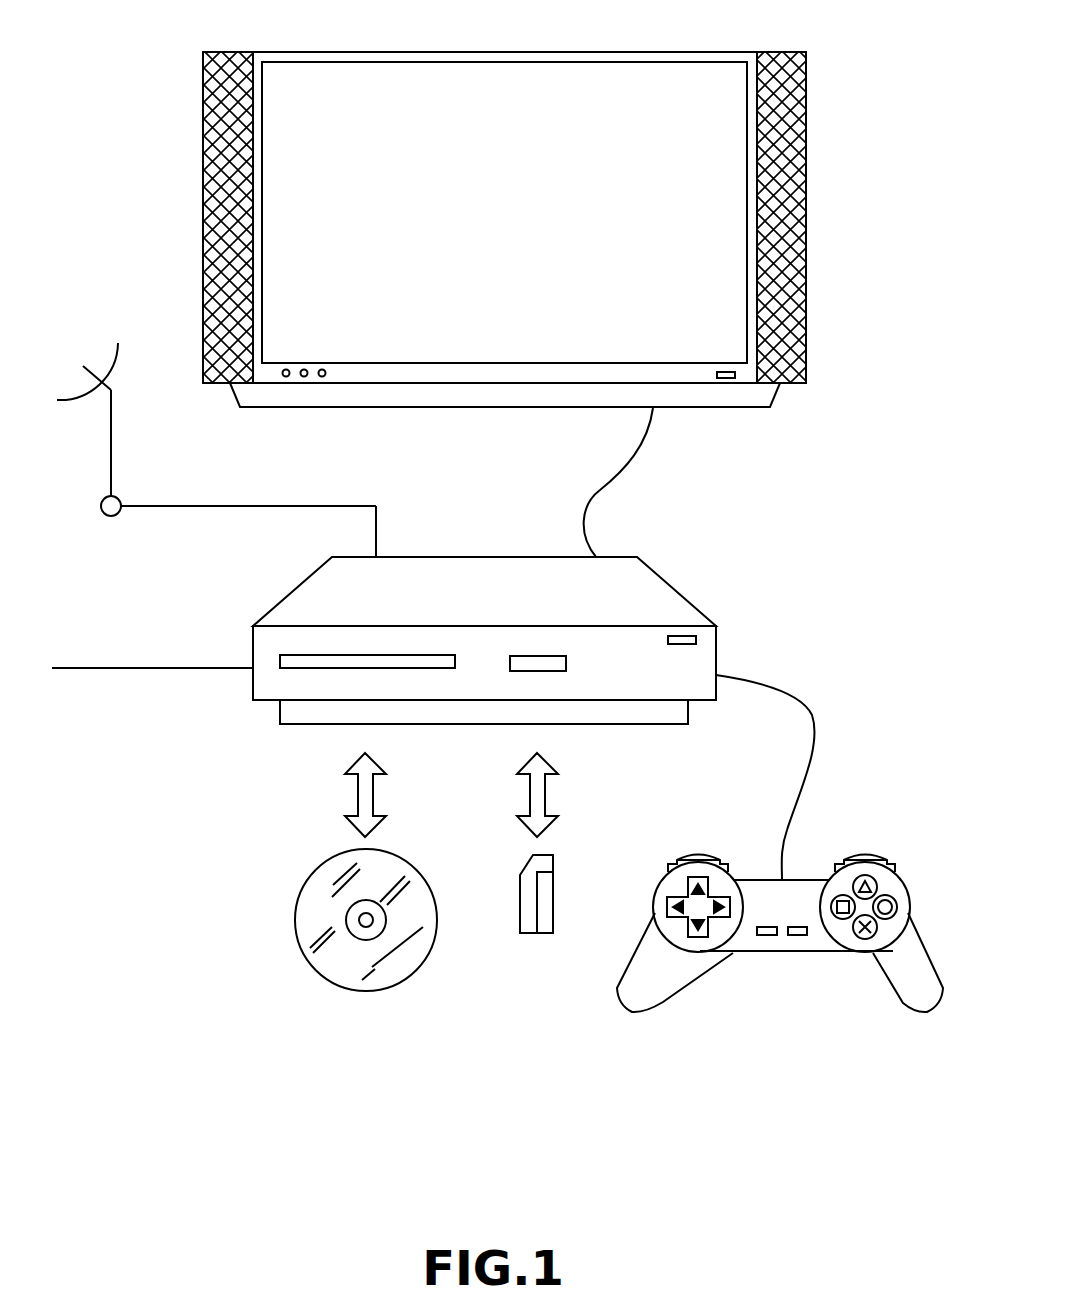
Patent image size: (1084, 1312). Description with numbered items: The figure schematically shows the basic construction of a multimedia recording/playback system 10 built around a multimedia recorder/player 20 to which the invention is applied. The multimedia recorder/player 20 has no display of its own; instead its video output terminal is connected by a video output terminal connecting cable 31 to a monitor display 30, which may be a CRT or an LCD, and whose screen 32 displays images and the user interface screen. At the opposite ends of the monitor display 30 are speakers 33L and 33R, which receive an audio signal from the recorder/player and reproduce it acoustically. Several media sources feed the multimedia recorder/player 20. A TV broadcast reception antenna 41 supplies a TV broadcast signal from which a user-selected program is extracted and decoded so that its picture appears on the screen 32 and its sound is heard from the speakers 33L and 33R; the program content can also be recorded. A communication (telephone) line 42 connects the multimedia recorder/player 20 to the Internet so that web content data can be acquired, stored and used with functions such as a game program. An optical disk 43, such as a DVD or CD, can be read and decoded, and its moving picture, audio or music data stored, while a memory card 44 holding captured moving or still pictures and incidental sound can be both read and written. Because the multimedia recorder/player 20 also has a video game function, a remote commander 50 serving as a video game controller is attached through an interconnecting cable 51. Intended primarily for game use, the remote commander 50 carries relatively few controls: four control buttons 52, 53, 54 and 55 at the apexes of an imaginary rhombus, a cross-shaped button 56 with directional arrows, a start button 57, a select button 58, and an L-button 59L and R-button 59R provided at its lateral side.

The multimedia recording/playback system 10 is at (870, 532).
The multimedia recorder/player 20 is at (712, 572).
The monitor display 30 is at (805, 243).
The video output terminal connecting cable 31 is at (622, 470).
The screen 32 is at (672, 70).
The speaker 33L is at (215, 141).
The speaker 33R is at (797, 145).
The TV broadcast reception antenna 41 is at (115, 366).
The communication (telephone) line 42 is at (132, 670).
The optical disk 43 is at (366, 991).
The memory card 44 is at (540, 933).
The remote commander 50 is at (628, 1012).
The interconnecting cable 51 is at (801, 707).
The control button 52 is at (856, 883).
The control button 53 is at (895, 904).
The control button 54 is at (870, 938).
The control button 55 is at (846, 919).
The cross-shaped button 56 is at (667, 902).
The start button 57 is at (798, 937).
The select button 58 is at (762, 937).
The L-button 59L is at (698, 852).
The R-button 59R is at (870, 852).